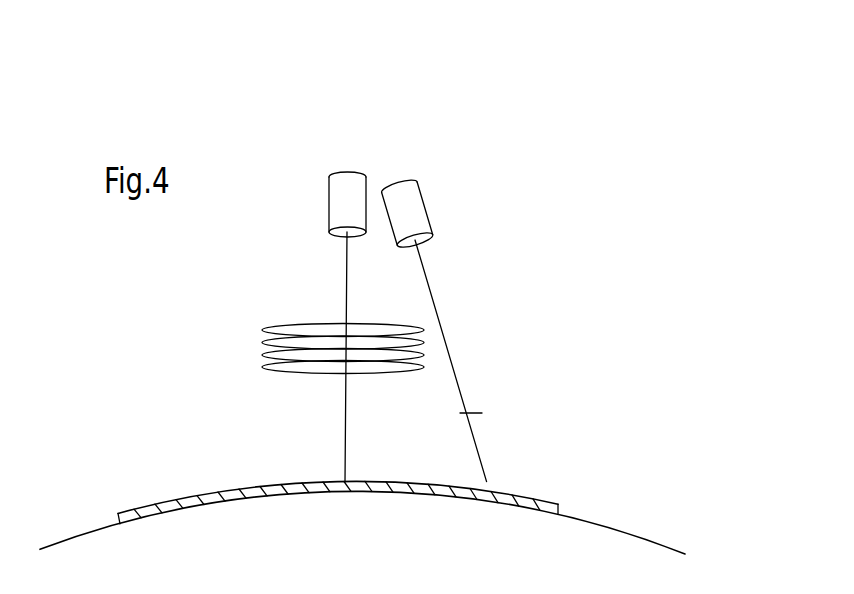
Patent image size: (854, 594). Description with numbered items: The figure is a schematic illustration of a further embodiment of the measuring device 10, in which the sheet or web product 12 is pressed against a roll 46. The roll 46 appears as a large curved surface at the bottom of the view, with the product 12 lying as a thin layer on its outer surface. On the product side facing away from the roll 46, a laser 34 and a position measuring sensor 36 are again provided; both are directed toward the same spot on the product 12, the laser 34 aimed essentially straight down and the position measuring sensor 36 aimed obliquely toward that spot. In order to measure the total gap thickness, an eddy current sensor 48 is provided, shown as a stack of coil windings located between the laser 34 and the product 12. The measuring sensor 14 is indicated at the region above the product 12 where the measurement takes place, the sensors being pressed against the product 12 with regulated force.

The measuring device 10 is at (557, 232).
The sheet or web product 12 is at (560, 497).
The measuring sensor 14 is at (465, 411).
The laser 34 is at (353, 160).
The position measuring sensor 36 is at (435, 170).
The roll 46 is at (650, 537).
The eddy current sensor 48 is at (420, 316).